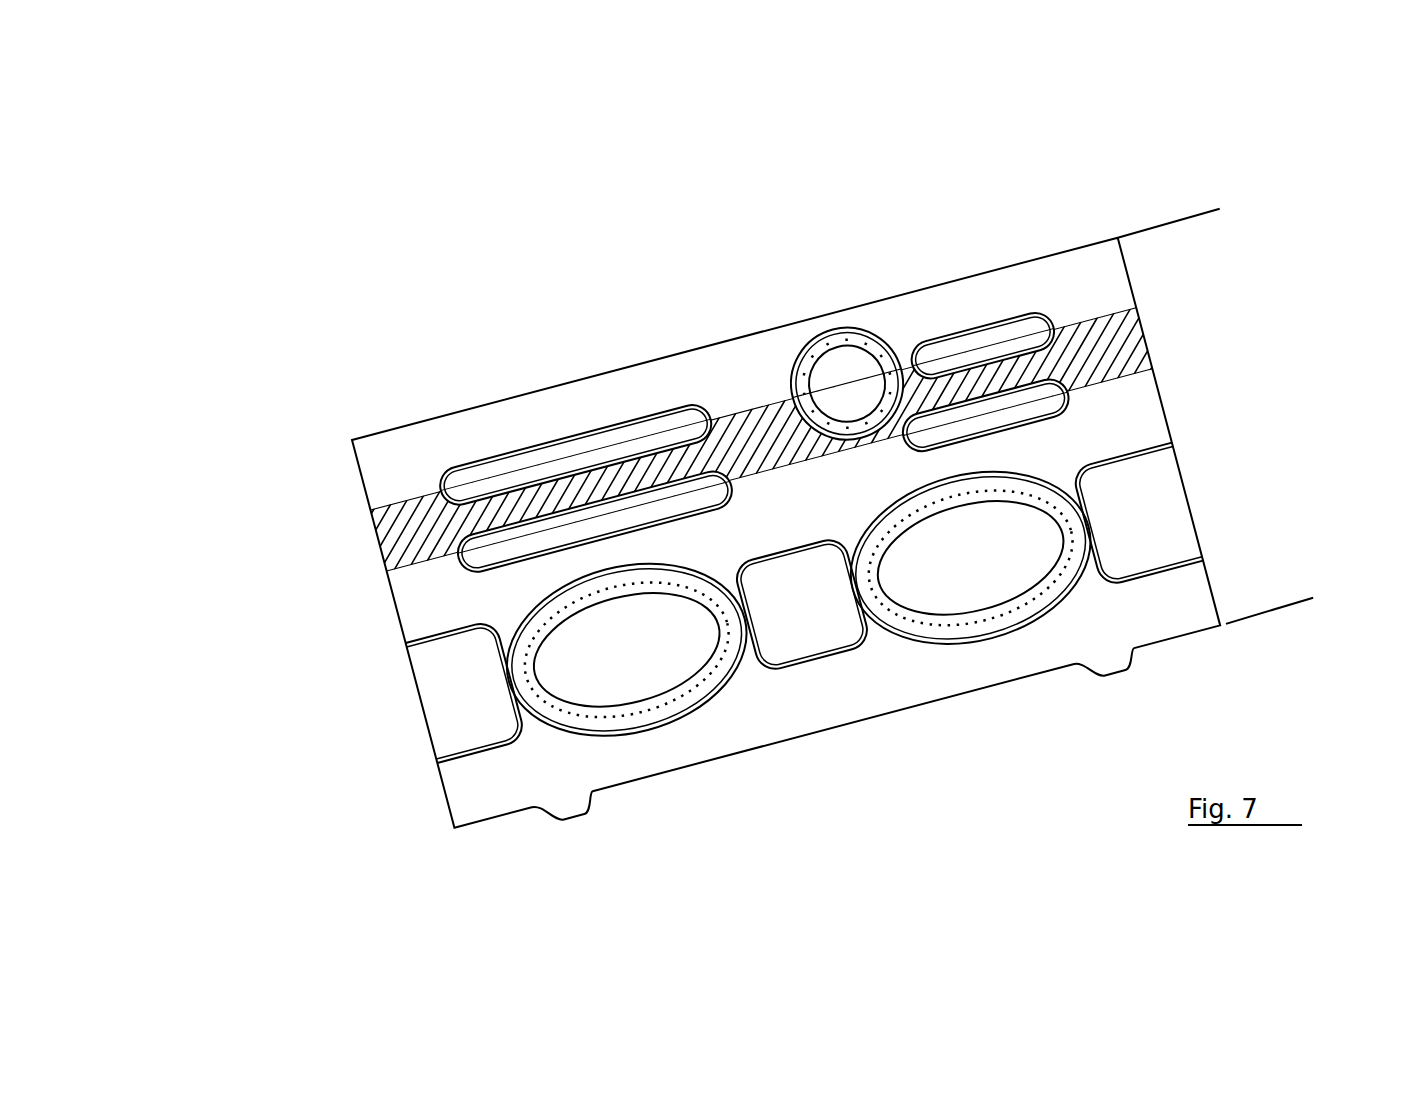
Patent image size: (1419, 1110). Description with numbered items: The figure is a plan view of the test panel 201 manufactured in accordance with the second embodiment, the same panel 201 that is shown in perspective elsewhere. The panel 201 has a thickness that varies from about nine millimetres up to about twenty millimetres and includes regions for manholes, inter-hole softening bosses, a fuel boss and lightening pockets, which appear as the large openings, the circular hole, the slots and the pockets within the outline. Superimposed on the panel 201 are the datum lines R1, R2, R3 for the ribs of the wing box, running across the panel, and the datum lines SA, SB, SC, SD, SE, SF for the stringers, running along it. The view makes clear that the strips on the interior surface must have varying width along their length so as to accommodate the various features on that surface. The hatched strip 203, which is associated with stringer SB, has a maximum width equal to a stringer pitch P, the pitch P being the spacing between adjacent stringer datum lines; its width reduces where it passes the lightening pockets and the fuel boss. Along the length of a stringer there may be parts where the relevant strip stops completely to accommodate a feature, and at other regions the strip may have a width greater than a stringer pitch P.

The panel 201 is at (972, 722).
The strip 203 is at (1117, 360).
The datum line for rib R1 is at (560, 885).
The datum line for rib R2 is at (847, 798).
The datum line for rib R3 is at (1158, 705).
The datum line for stringer SA is at (1180, 237).
The datum line for stringer SB is at (1200, 302).
The datum line for stringer SC is at (1213, 368).
The datum line for stringer SD is at (1230, 432).
The datum line for stringer SE is at (1250, 498).
The datum line for stringer SF is at (1267, 565).
The stringer pitch P is at (1162, 251).